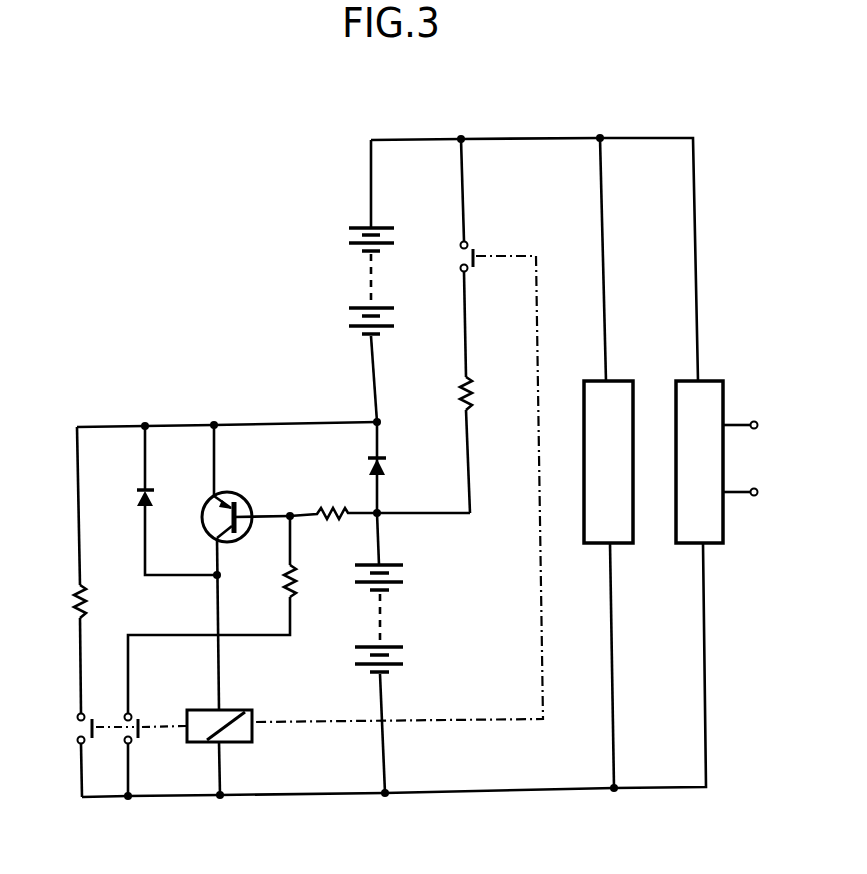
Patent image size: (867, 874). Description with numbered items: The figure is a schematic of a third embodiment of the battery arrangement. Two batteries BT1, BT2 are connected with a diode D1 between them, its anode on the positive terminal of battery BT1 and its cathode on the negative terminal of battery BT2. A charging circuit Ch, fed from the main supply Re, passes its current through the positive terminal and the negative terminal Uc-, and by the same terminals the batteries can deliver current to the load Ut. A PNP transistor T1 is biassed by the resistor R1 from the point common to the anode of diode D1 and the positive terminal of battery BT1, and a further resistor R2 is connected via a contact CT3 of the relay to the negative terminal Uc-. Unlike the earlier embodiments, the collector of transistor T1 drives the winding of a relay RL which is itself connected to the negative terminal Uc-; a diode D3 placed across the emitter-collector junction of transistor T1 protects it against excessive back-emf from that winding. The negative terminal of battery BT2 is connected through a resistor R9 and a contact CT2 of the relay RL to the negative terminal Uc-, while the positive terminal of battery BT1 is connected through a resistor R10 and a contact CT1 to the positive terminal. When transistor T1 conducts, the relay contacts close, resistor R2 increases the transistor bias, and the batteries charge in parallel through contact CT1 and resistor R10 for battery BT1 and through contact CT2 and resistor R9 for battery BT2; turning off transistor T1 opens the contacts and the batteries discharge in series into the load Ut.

The battery BT2 is at (368, 268).
The contact of the relay CT1 is at (476, 250).
The resistor R10 is at (474, 390).
The diode D1 is at (384, 474).
The resistor R1 is at (322, 510).
The battery BT1 is at (386, 602).
The PNP transistor T1 is at (224, 496).
The diode D3 is at (137, 500).
The resistor R2 is at (284, 592).
The resistor R9 is at (90, 600).
The contact of the relay CT2 is at (93, 718).
The contact of the relay CT3 is at (139, 718).
The relay RL is at (228, 710).
The load Ut is at (609, 518).
The charging circuit Ch is at (703, 518).
The main supply Re is at (745, 459).
The negative terminal Uc- is at (600, 803).